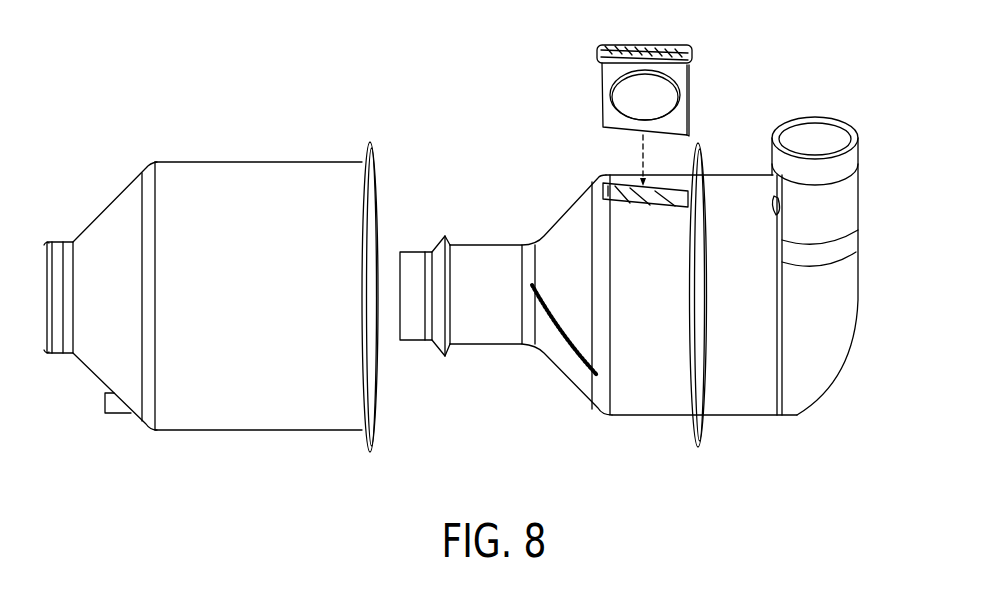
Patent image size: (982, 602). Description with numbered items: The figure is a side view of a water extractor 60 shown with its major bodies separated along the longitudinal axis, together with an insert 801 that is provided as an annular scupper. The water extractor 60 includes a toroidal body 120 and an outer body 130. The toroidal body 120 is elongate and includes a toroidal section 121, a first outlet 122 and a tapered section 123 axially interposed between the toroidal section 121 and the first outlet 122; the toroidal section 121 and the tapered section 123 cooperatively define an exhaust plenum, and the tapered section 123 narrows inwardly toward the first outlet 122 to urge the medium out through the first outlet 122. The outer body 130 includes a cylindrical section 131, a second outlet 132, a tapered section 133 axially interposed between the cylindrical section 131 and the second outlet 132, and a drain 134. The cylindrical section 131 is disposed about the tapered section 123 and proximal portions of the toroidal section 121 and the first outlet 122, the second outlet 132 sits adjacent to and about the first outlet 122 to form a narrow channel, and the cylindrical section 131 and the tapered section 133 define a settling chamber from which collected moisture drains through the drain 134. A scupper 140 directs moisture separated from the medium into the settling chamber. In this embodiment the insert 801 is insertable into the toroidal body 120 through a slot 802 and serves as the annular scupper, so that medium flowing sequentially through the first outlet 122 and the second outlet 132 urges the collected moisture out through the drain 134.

The water extractor 60 is at (875, 100).
The toroidal body 120 is at (592, 291).
The toroidal section 121 is at (643, 401).
The first outlet 122 is at (415, 260).
The tapered section 123 is at (553, 350).
The outer body 130 is at (211, 290).
The cylindrical section 131 is at (260, 418).
The second outlet 132 is at (53, 357).
The tapered section 133 is at (97, 233).
The drain 134 is at (118, 412).
The scupper 140 is at (655, 79).
The insert 801 is at (597, 52).
The slot 802 is at (603, 183).